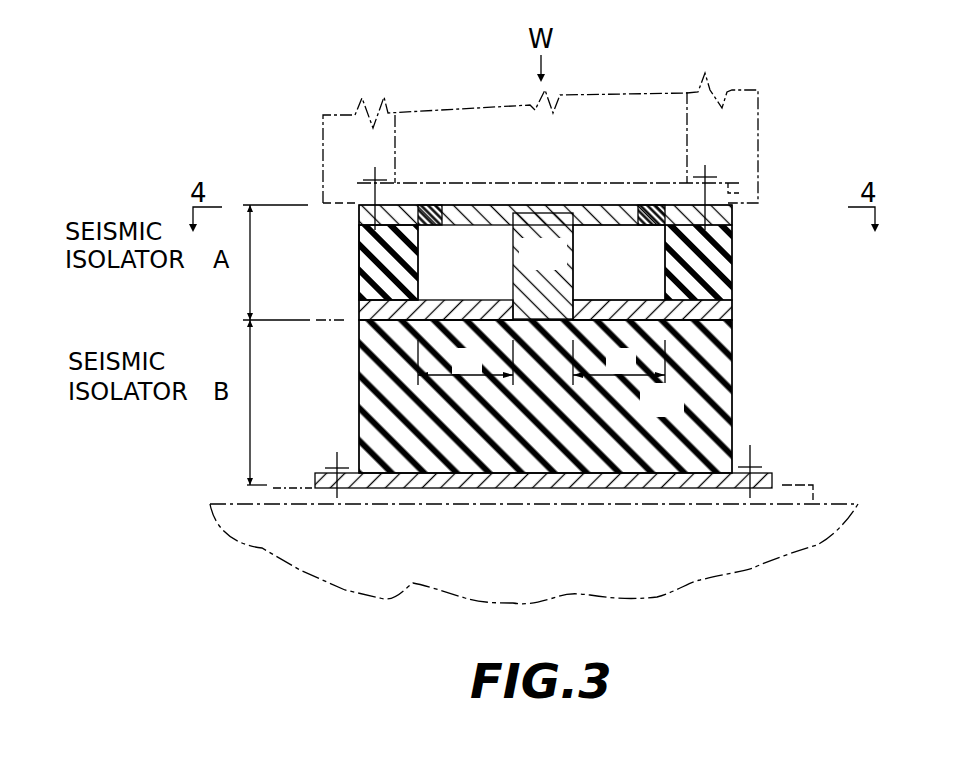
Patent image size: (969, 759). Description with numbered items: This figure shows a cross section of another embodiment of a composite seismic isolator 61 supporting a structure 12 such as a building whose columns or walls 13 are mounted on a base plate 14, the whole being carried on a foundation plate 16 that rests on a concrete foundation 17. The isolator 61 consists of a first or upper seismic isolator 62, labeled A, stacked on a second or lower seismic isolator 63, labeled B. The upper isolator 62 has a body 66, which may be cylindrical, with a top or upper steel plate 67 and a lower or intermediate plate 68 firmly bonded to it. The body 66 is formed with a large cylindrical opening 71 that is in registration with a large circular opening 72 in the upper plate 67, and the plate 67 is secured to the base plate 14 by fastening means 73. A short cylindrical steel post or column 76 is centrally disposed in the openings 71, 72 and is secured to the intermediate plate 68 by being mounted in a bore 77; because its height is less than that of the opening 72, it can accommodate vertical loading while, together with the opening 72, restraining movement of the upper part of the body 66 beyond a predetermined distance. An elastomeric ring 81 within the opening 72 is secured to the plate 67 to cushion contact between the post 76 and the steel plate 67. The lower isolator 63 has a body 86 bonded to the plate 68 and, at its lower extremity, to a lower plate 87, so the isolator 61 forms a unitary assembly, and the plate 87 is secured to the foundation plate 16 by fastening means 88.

The structure 12 is at (472, 146).
The columns or walls 13 is at (758, 109).
The base plate 14 is at (760, 183).
The foundation plate 16 is at (300, 488).
The foundation 17 is at (256, 520).
The composite seismic isolator 61 is at (356, 389).
The first or upper seismic isolator 62 is at (738, 281).
The second or lower seismic isolator 63 is at (738, 371).
The body 66 is at (735, 258).
The top or upper steel plate 67 is at (735, 215).
The lower or intermediate plate 68 is at (735, 310).
The cylindrical opening 71 is at (366, 257).
The circular opening 72 is at (428, 205).
The fastening means 73 is at (712, 178).
The cylindrical steel post or column 76 is at (560, 266).
The bore 77 is at (583, 300).
The elastomeric ring 81 is at (650, 204).
The body 86 is at (678, 413).
The lower plate 87 is at (779, 480).
The fastening means 88 is at (752, 467).